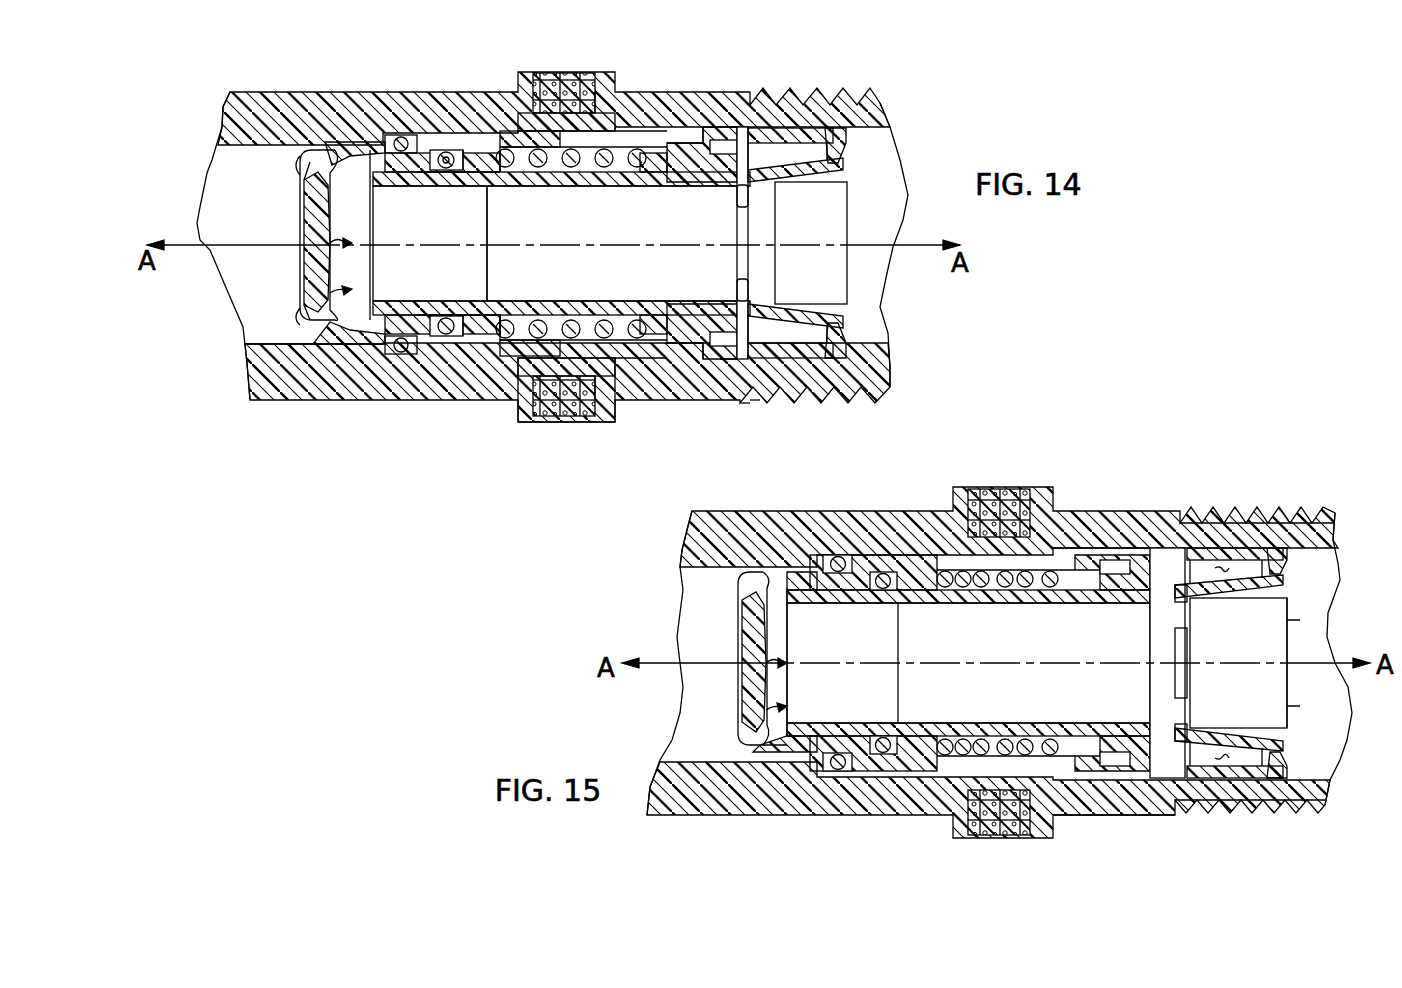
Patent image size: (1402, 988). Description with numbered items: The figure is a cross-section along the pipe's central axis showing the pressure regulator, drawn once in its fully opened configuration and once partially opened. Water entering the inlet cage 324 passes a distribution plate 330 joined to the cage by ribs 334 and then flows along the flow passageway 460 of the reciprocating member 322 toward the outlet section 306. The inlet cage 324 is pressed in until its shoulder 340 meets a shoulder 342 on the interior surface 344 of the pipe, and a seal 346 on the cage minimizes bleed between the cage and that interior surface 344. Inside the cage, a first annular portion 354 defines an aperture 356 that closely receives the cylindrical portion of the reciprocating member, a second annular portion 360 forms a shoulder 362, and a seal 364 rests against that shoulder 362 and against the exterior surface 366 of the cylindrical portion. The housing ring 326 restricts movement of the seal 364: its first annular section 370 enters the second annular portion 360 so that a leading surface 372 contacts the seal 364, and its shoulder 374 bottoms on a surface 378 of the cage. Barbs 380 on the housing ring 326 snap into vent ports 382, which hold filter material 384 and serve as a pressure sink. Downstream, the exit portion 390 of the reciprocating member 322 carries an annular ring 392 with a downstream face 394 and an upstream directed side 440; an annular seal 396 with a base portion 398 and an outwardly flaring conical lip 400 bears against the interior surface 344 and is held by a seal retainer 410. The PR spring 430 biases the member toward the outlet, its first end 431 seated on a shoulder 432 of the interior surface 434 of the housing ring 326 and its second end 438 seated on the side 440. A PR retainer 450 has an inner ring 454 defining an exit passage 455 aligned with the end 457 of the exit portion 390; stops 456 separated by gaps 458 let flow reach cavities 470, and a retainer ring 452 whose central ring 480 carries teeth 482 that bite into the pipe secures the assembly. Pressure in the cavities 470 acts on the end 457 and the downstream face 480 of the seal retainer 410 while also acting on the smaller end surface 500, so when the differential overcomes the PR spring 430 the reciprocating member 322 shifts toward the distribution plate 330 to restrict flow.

In FIG. 14, the outlet section 306 is at (727, 425).
In FIG. 15, the outlet section 306 is at (1128, 824).
In FIG. 14, the reciprocating member 322 is at (605, 322).
In FIG. 15, the reciprocating member 322 is at (807, 723).
In FIG. 14, the inlet cage 324 is at (286, 150).
In FIG. 15, the inlet cage 324 is at (696, 748).
In FIG. 15, the housing ring 326 is at (940, 560).
In FIG. 14, the distribution plate 330 is at (300, 183).
In FIG. 14, the ribs 334 is at (325, 348).
In FIG. 14, the shoulder 340 is at (355, 140).
In FIG. 14, the shoulder 342 is at (401, 135).
In FIG. 14, the interior surface 344 is at (598, 125).
In FIG. 14, the seal 346 is at (446, 150).
In FIG. 14, the first annular portion 354 is at (328, 330).
In FIG. 14, the aperture 356 is at (300, 312).
In FIG. 14, the second annular portion 360 is at (403, 355).
In FIG. 14, the step or shoulder 362 is at (446, 338).
In FIG. 14, the seal 364 is at (468, 322).
In FIG. 14, the exterior surface 366 is at (446, 318).
In FIG. 14, the first annular section 370 is at (497, 305).
In FIG. 14, the leading surface 372 is at (480, 346).
In FIG. 14, the shoulder 374 is at (536, 110).
In FIG. 14, the surface 378 is at (522, 120).
In FIG. 14, the barbs 380 is at (540, 422).
In FIG. 14, the vent ports 382 is at (600, 420).
In FIG. 14, the filter material 384 is at (592, 452).
In FIG. 14, the exit portion 390 is at (744, 126).
In FIG. 15, the exit portion 390 is at (1110, 538).
In FIG. 14, the annular ring 392 is at (690, 145).
In FIG. 14, the downstream face 394 is at (687, 321).
In FIG. 14, the annular seal 396 is at (688, 358).
In FIG. 14, the base portion 398 is at (662, 360).
In FIG. 14, the conical lip 400 is at (714, 402).
In FIG. 14, the seal retainer 410 is at (718, 160).
In FIG. 15, the seal retainer 410 is at (1117, 743).
In FIG. 14, the PR spring 430 is at (615, 172).
In FIG. 15, the PR spring 430 is at (1017, 590).
In FIG. 14, the first end 431 is at (487, 200).
In FIG. 15, the first end 431 is at (962, 560).
In FIG. 14, the shoulder 432 is at (506, 172).
In FIG. 15, the shoulder 432 is at (948, 587).
In FIG. 14, the interior surface 434 is at (556, 172).
In FIG. 14, the second end 438 is at (622, 140).
In FIG. 14, the upstream directed side 440 is at (655, 138).
In FIG. 14, the PR retainer 450 is at (792, 132).
In FIG. 14, the retainer ring 452 is at (847, 140).
In FIG. 15, the retainer ring 452 is at (1290, 560).
In FIG. 15, the inner ring 454 is at (1286, 600).
In FIG. 15, the exit passage 455 is at (1262, 680).
In FIG. 14, the stops 456 is at (752, 176).
In FIG. 15, the stops 456 is at (1183, 604).
In FIG. 15, the end 457 is at (1157, 592).
In FIG. 15, the gaps 458 is at (1166, 626).
In FIG. 14, the flow passageway 460 is at (398, 219).
In FIG. 15, the flow passageway 460 is at (945, 654).
In FIG. 15, the cavities 470 is at (1215, 545).
In FIG. 15, the central ring 480 is at (1160, 548).
In FIG. 15, the barbs or teeth 482 is at (1290, 535).
In FIG. 15, the end surface 500 is at (780, 603).